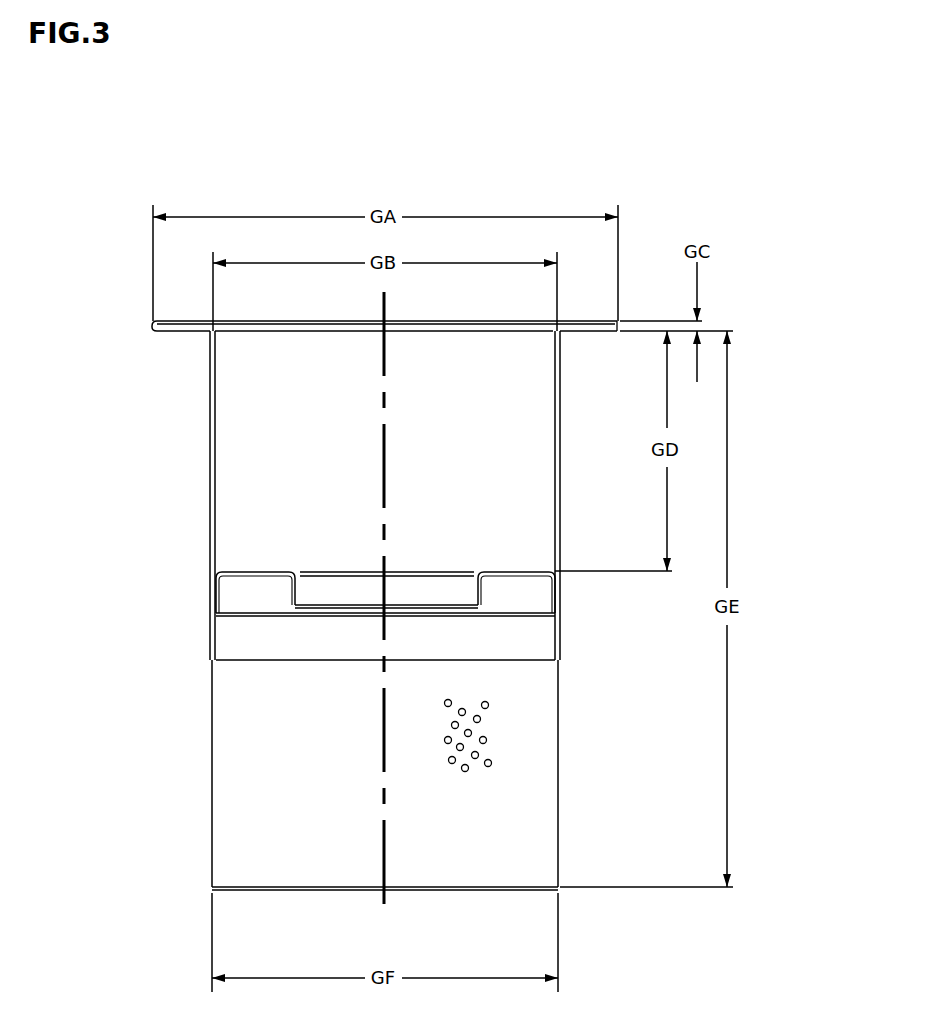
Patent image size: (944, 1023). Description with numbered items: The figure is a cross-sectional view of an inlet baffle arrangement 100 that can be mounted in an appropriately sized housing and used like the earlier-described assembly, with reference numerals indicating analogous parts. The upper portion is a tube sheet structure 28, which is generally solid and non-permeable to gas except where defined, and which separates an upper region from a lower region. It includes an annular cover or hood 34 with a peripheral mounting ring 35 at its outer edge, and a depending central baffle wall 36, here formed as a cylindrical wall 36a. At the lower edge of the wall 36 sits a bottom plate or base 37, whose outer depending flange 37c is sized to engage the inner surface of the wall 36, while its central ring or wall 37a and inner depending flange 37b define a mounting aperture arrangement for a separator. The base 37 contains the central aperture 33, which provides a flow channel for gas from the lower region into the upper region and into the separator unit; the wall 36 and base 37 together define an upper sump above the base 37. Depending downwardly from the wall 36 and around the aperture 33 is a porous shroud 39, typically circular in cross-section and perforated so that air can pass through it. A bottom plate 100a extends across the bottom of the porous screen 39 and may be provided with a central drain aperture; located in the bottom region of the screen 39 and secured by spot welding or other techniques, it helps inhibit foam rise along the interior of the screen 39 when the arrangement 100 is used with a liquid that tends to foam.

The inlet baffle arrangement 100 is at (742, 307).
The bottom plate 100a is at (287, 892).
The tube sheet structure 28 is at (560, 388).
The central aperture 33 is at (296, 598).
The annular cover or hood 34 is at (178, 334).
The peripheral mounting ring 35 is at (152, 324).
The central baffle wall 36 is at (560, 445).
The cylindrical wall 36a is at (560, 487).
The bottom plate or base 37 is at (512, 572).
The central ring or wall 37a is at (530, 577).
The inner depending flange 37b is at (478, 585).
The outer depending flange 37c is at (558, 598).
The porous shroud 39 is at (560, 744).